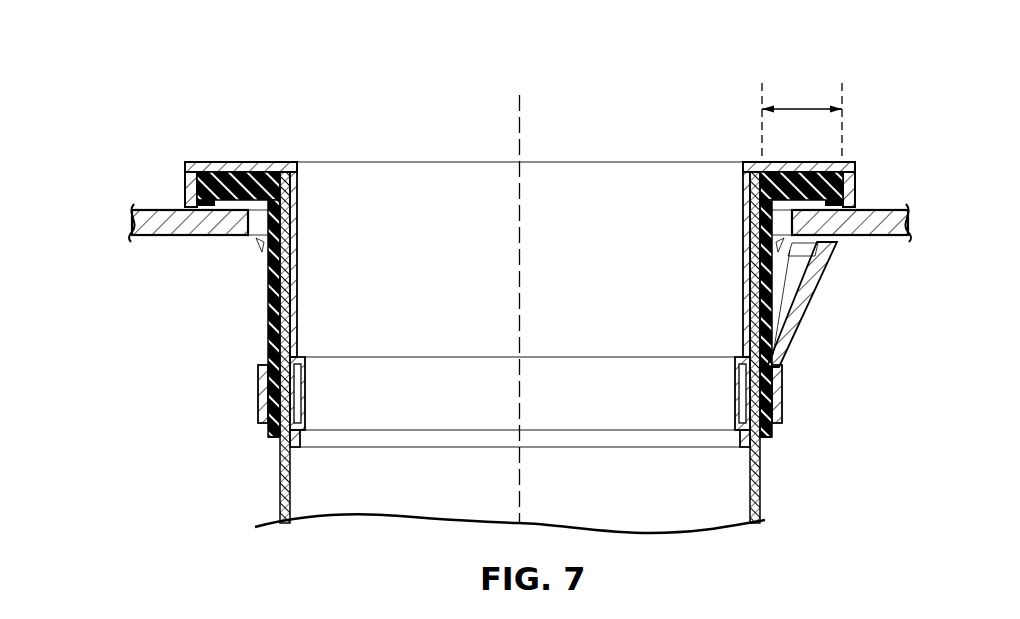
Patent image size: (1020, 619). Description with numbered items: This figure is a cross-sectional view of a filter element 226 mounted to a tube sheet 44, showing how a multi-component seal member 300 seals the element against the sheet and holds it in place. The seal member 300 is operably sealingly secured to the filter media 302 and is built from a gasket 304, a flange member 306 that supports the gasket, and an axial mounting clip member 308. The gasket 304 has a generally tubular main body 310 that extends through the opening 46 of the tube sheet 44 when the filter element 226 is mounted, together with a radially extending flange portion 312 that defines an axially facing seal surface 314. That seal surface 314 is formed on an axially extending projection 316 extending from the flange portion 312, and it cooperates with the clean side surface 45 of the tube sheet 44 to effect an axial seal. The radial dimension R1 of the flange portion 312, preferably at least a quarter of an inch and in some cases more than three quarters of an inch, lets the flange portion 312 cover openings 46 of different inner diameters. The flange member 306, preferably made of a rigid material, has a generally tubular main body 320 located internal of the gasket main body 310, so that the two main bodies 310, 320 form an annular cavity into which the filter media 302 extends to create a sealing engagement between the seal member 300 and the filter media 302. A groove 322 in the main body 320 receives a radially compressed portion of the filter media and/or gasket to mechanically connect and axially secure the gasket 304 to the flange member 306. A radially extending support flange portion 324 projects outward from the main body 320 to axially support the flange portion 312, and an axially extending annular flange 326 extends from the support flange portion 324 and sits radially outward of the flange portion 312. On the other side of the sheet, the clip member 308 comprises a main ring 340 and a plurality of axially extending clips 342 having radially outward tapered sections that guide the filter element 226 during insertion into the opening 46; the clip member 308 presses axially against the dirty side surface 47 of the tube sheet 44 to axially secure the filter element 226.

The seal member 300 is at (143, 158).
The filter element 226 is at (590, 135).
The axially extending projection 316 is at (187, 207).
The flange member 306 is at (277, 162).
The flange portion 312 is at (270, 162).
The annular flange 326 is at (185, 177).
The gasket 304 is at (226, 185).
The support flange portion 324 is at (198, 172).
The main body of flange member 320 is at (297, 292).
The groove 322 is at (268, 434).
The filter media 302 is at (297, 255).
The main body of gasket 310 is at (297, 222).
The tube sheet 44 is at (130, 216).
The seal surface 314 is at (212, 232).
The dirty side surface 47 is at (155, 237).
The clean side surface 45 is at (190, 204).
The opening 46 is at (258, 255).
The main ring 340 is at (258, 388).
The clip member 308 is at (825, 270).
The clips 342 is at (807, 318).
The radial dimension R1 is at (792, 108).